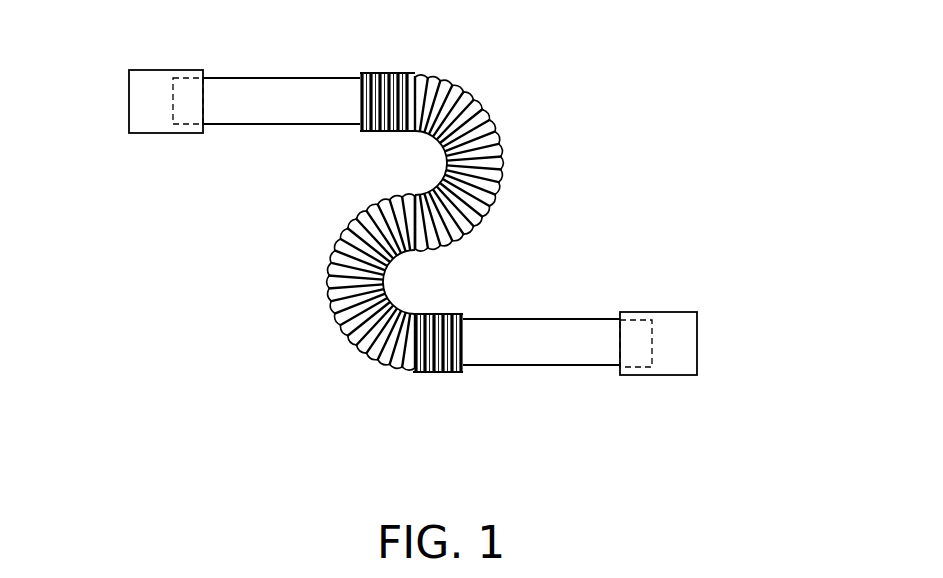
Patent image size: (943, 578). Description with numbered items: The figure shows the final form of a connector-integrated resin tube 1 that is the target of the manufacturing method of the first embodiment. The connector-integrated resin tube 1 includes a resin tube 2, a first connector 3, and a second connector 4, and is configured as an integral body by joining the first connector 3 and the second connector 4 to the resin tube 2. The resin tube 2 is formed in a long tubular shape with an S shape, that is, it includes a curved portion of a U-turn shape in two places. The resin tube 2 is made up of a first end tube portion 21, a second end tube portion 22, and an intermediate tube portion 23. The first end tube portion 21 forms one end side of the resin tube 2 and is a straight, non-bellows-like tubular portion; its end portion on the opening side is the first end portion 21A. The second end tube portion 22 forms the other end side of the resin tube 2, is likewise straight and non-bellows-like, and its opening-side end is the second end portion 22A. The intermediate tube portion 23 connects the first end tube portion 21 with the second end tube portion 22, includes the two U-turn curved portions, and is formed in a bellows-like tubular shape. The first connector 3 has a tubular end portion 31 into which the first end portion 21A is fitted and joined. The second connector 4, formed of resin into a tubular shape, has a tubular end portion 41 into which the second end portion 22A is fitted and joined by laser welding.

The connector-integrated resin tube 1 is at (693, 88).
The resin tube 2 is at (411, 249).
The first connector 3 is at (140, 113).
The second connector 4 is at (697, 342).
The first end tube portion 21 is at (279, 125).
The first end portion 21A is at (190, 133).
The second end tube portion 22 is at (524, 366).
The second end portion 22A is at (638, 376).
The intermediate tube portion 23 is at (338, 327).
The end portion of the first connector 31 is at (188, 70).
The end portion of the second connector 41 is at (634, 312).